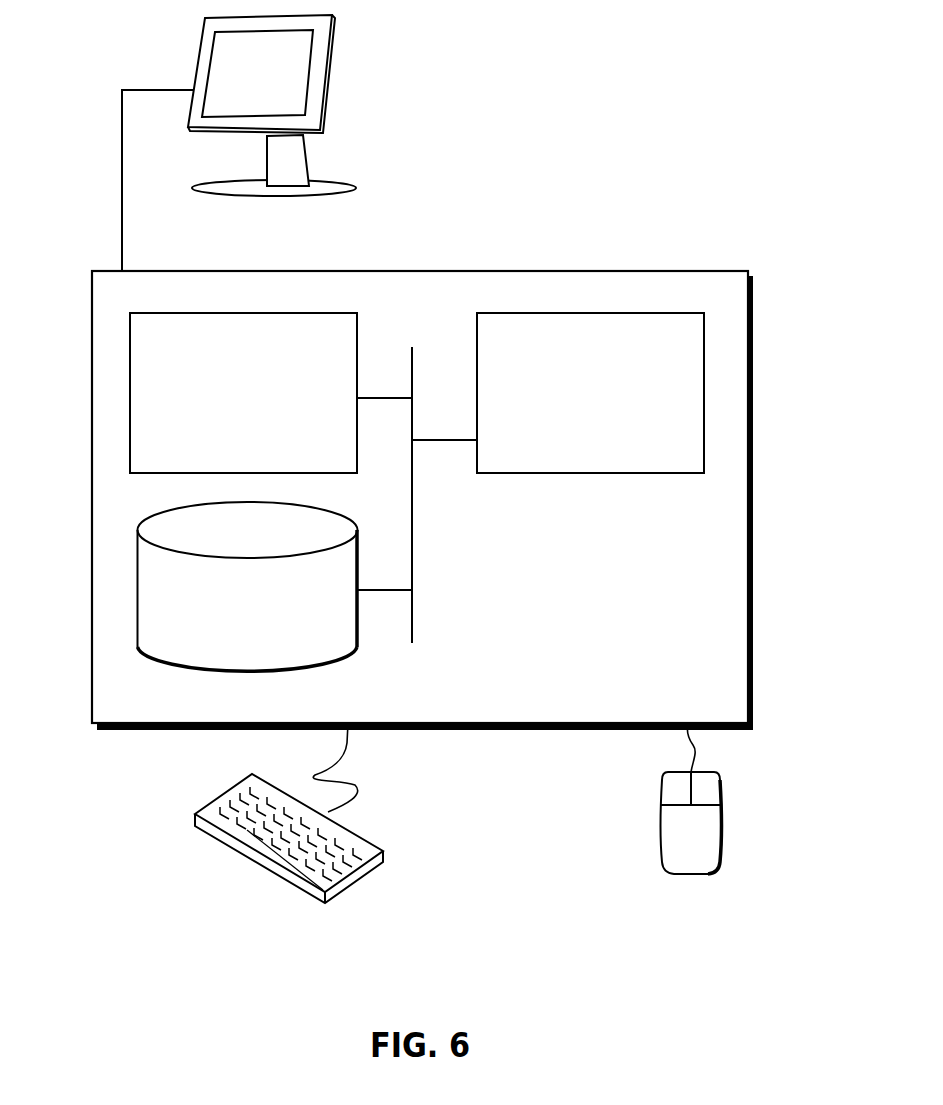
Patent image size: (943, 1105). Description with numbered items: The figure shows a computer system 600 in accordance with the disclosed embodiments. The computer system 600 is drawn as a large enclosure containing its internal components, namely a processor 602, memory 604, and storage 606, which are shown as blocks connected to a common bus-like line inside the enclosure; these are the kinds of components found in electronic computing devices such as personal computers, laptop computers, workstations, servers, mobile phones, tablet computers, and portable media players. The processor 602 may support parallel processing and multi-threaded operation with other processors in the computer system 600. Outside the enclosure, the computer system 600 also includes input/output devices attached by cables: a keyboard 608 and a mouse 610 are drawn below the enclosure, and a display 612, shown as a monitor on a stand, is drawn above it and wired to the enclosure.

The computer system 600 is at (467, 271).
The processor 602 is at (572, 405).
The memory 604 is at (223, 405).
The storage 606 is at (229, 616).
The keyboard 608 is at (213, 838).
The mouse 610 is at (715, 846).
The display 612 is at (239, 143).